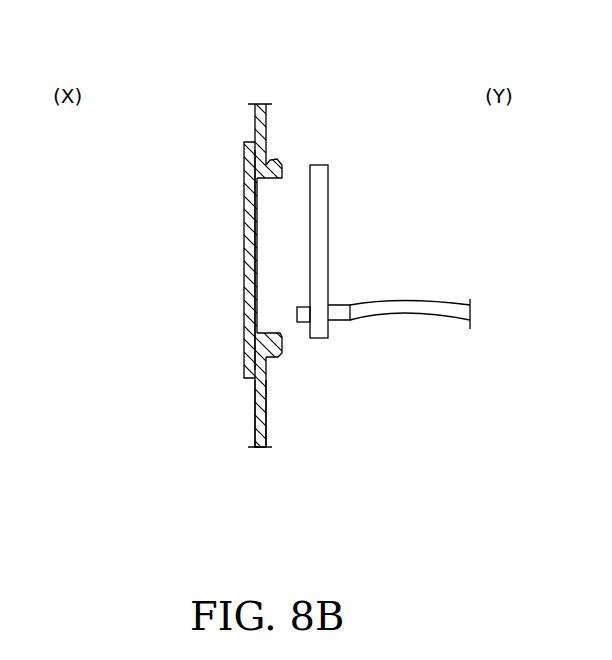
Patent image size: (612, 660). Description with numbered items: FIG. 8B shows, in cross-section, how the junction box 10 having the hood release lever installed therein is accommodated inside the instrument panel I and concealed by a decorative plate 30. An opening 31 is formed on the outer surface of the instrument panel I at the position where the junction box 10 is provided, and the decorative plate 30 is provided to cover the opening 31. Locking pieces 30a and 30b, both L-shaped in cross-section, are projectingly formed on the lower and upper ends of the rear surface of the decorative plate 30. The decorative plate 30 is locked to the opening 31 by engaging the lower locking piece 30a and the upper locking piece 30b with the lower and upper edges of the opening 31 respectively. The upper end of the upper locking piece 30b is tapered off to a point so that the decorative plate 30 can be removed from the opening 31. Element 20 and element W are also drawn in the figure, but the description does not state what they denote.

The junction box 10 is at (336, 164).
The clamp block 20 is at (303, 330).
The decorative plate 30 is at (241, 192).
The lower locking piece 30a is at (279, 341).
The upper locking piece 30b is at (281, 160).
The opening 31 is at (273, 257).
The wafer W is at (428, 303).
The instrument panel I is at (250, 418).